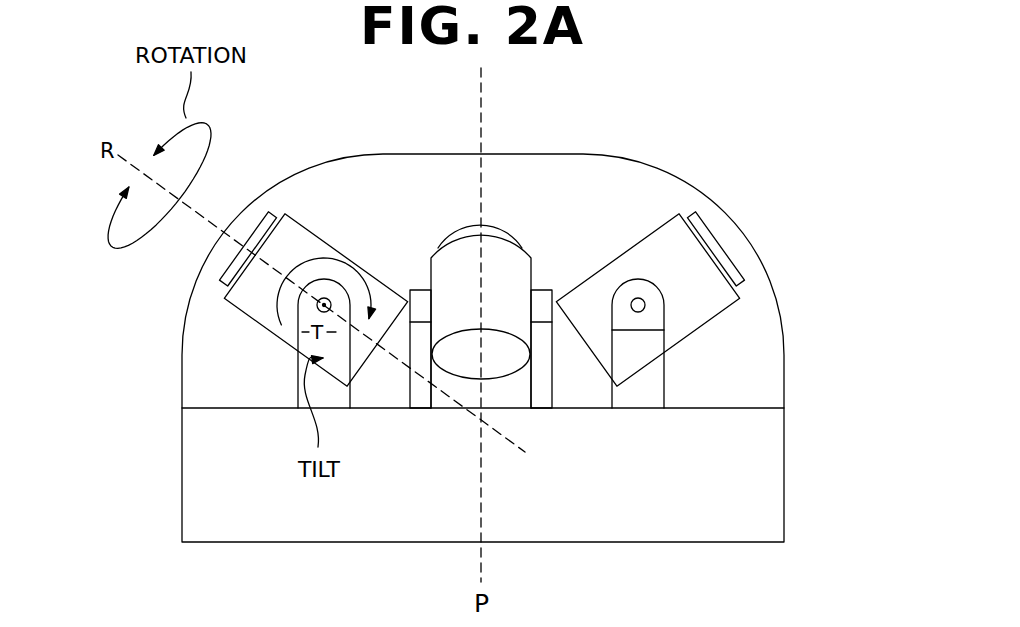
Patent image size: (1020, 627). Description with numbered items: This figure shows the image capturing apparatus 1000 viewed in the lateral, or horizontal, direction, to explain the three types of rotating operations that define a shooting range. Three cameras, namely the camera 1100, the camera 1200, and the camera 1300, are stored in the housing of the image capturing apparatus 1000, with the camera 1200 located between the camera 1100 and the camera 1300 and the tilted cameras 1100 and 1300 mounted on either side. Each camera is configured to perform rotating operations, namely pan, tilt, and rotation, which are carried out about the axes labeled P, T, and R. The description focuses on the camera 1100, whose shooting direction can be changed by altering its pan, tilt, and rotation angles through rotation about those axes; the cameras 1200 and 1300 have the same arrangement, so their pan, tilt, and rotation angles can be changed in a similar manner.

The image capturing apparatus 1000 is at (742, 542).
The camera 1100 is at (233, 309).
The camera 1200 is at (432, 252).
The camera 1300 is at (650, 232).